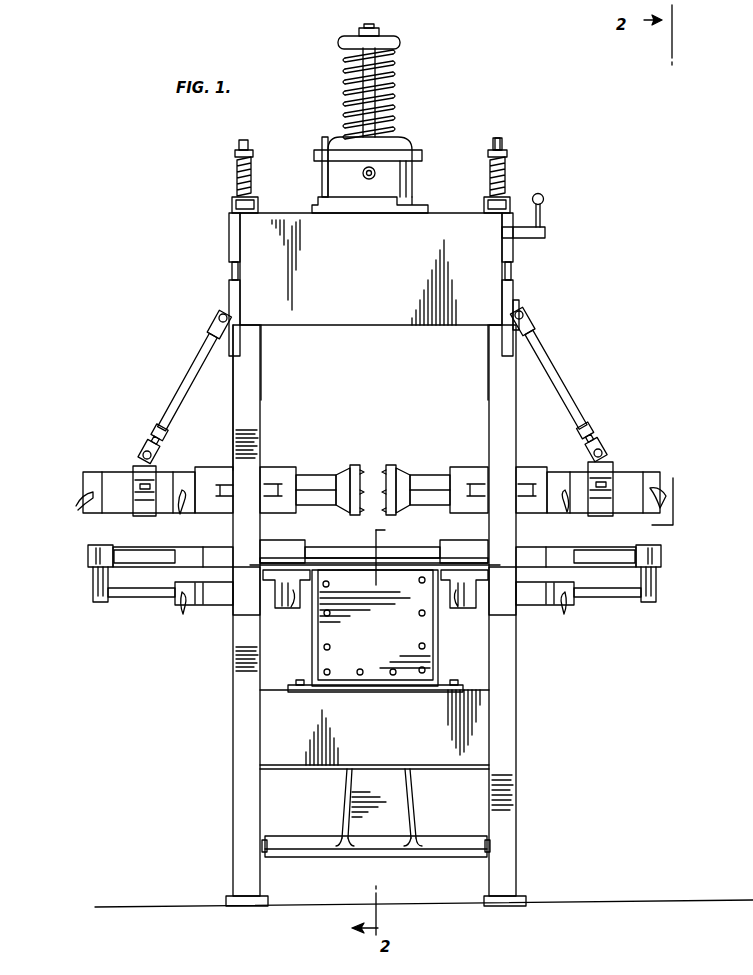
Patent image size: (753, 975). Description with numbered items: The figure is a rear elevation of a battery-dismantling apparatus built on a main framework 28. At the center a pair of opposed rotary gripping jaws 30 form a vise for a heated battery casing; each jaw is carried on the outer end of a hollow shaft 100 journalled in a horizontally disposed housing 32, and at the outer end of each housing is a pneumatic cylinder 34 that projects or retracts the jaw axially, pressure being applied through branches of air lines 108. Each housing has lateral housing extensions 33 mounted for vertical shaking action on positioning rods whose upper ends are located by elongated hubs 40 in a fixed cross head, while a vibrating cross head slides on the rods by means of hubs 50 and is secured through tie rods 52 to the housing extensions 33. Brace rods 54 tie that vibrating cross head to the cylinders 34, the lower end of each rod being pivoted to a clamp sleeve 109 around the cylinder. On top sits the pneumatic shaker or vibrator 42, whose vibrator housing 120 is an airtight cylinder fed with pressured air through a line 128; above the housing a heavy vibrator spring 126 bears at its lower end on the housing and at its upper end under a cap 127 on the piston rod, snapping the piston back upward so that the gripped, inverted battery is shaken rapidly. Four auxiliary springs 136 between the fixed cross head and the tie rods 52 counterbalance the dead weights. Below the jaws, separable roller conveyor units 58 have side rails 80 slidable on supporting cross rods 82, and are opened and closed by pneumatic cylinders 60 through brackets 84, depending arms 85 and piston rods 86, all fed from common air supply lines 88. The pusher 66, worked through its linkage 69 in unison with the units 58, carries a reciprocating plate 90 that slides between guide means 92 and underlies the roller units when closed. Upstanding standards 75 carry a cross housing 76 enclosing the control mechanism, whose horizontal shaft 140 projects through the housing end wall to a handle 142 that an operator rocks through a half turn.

The main framework 28 is at (268, 731).
The rotary gripping jaws 30 is at (350, 466).
The jaw-supporting housings 32 is at (460, 465).
The lateral housing extensions 33 is at (512, 468).
The pneumatic cylinders 34 is at (120, 470).
The elongated hubs 40 is at (516, 243).
The pneumatic shaker or vibrator 42 is at (338, 130).
The hubs 50 is at (514, 300).
The tie or connecting rods 52 is at (497, 138).
The brace rods 54 is at (566, 374).
The separable roller conveyor units 58 is at (280, 548).
The pneumatic cylinders 60 is at (222, 605).
The pusher 66 is at (398, 650).
The linkage 69 is at (404, 810).
The upstanding standards 75 is at (255, 397).
The cross housing 76 is at (466, 240).
The side rails 80 is at (438, 560).
The supporting cross rods 82 is at (350, 552).
The brackets 84 is at (88, 556).
The depending arms 85 is at (92, 582).
The piston rods 86 is at (130, 600).
The air supply lines 88 is at (182, 622).
The reciprocating plate 90 is at (345, 568).
The guide means 92 is at (426, 578).
The hollow shaft 100 is at (314, 477).
The air lines 108 is at (674, 492).
The clamp sleeve 109 is at (604, 455).
The vibrator housing 120 is at (402, 142).
The vibrator spring 126 is at (393, 77).
The cap 127 is at (398, 38).
The air line 128 is at (377, 173).
The auxiliary springs 136 is at (235, 178).
The horizontal shaft 140 is at (548, 233).
The handle 142 is at (546, 198).